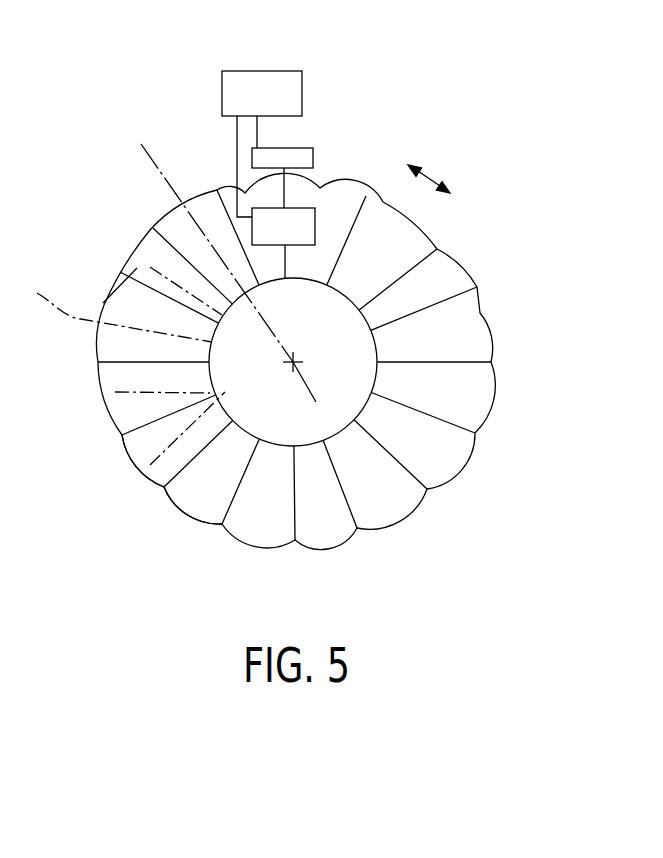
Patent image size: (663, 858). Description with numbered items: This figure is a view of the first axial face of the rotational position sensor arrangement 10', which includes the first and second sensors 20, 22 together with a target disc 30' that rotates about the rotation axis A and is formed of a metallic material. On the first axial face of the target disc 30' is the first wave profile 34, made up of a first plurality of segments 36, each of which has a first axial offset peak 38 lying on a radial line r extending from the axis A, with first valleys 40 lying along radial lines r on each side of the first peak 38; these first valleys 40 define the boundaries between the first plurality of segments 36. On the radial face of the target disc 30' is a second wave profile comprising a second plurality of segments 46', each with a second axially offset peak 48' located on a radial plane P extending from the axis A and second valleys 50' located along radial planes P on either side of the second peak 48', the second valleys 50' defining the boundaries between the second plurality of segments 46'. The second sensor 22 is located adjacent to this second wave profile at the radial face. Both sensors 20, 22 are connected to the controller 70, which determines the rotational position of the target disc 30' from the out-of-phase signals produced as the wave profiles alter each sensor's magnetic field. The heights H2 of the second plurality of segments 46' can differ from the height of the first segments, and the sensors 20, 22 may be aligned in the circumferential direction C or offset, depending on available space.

The rotational position sensor arrangement 10' is at (444, 48).
The first sensor 20 is at (305, 222).
The second sensor 22 is at (305, 152).
The controller 70 is at (275, 78).
The target disc 30' is at (295, 384).
The first wave profile 34 is at (177, 503).
The first plurality of segments 36 is at (165, 465).
The first axial offset peak 38 is at (217, 400).
The first valleys 40 is at (98, 360).
The second plurality of segments 46' is at (314, 327).
The second axially offset peak 48' is at (294, 345).
The second valleys 50' is at (295, 333).
The rotation axis A is at (299, 350).
The circumferential direction C is at (433, 177).
The radial plane P is at (150, 162).
The radial line r is at (143, 218).
The height of the second plurality of segments H2 is at (148, 311).